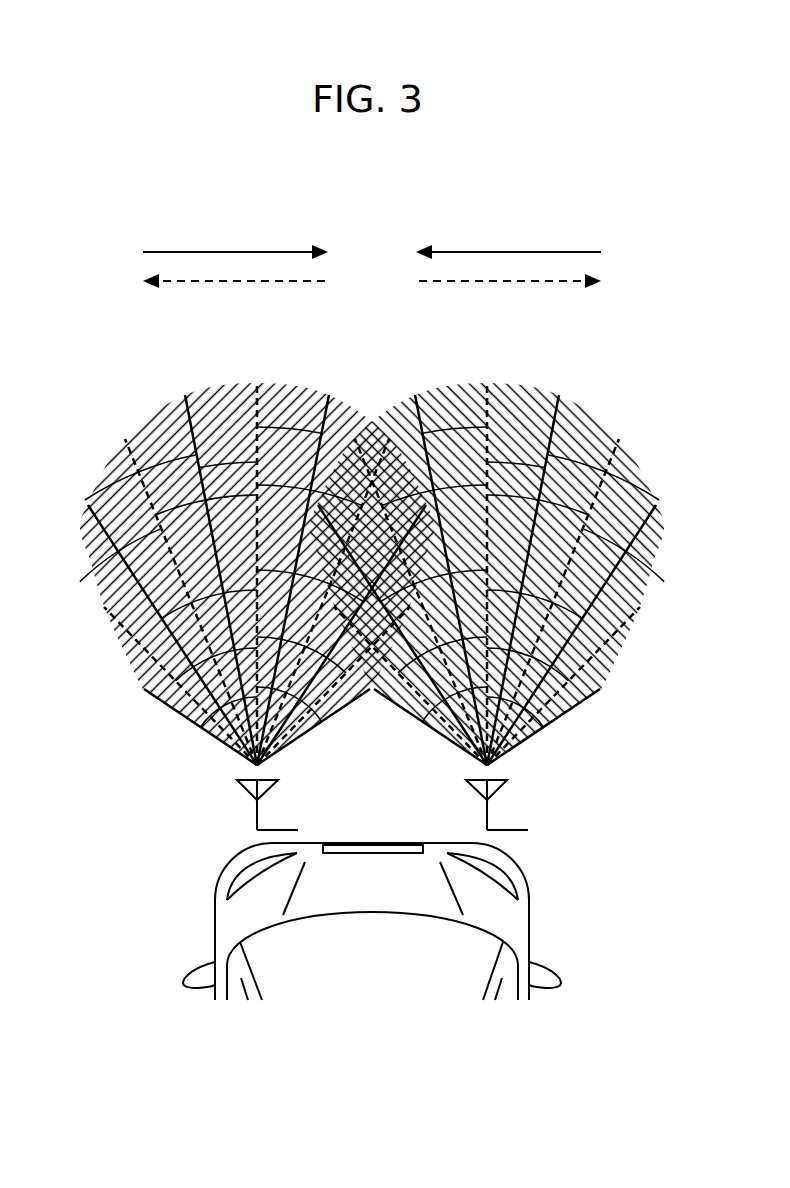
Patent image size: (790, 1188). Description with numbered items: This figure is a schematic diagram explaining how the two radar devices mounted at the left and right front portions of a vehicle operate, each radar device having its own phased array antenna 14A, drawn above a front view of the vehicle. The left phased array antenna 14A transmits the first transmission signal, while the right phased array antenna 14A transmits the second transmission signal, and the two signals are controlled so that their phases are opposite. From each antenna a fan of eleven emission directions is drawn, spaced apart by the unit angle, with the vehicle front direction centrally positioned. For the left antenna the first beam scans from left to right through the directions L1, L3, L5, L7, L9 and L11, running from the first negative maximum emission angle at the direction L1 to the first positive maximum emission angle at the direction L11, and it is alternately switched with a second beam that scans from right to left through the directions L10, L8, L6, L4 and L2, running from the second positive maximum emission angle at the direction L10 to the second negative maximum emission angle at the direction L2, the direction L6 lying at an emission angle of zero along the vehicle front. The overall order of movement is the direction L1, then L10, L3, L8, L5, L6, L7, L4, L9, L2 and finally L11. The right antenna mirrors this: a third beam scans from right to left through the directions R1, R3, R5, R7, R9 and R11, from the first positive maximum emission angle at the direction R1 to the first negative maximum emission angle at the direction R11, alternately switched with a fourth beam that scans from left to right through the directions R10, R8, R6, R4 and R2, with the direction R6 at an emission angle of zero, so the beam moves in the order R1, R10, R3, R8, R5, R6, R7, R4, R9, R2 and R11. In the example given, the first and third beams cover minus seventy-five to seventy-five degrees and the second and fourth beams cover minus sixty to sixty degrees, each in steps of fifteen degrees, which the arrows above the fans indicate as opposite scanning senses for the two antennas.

The phased array antenna 14A is at (240, 786).
The direction L1 is at (184, 723).
The direction L2 is at (156, 673).
The direction L3 is at (156, 625).
The direction L4 is at (177, 587).
The direction L5 is at (210, 567).
The direction L6 is at (258, 560).
The direction L7 is at (301, 567).
The direction L8 is at (389, 433).
The direction L9 is at (426, 505).
The direction L10 is at (410, 607).
The direction L11 is at (369, 692).
The direction R1 is at (562, 723).
The direction R2 is at (588, 673).
The direction R3 is at (589, 625).
The direction R4 is at (572, 587).
The direction R5 is at (534, 567).
The direction R6 is at (487, 560).
The direction R7 is at (443, 567).
The direction R8 is at (355, 433).
The direction R9 is at (318, 505).
The direction R10 is at (334, 607).
The direction R11 is at (375, 692).